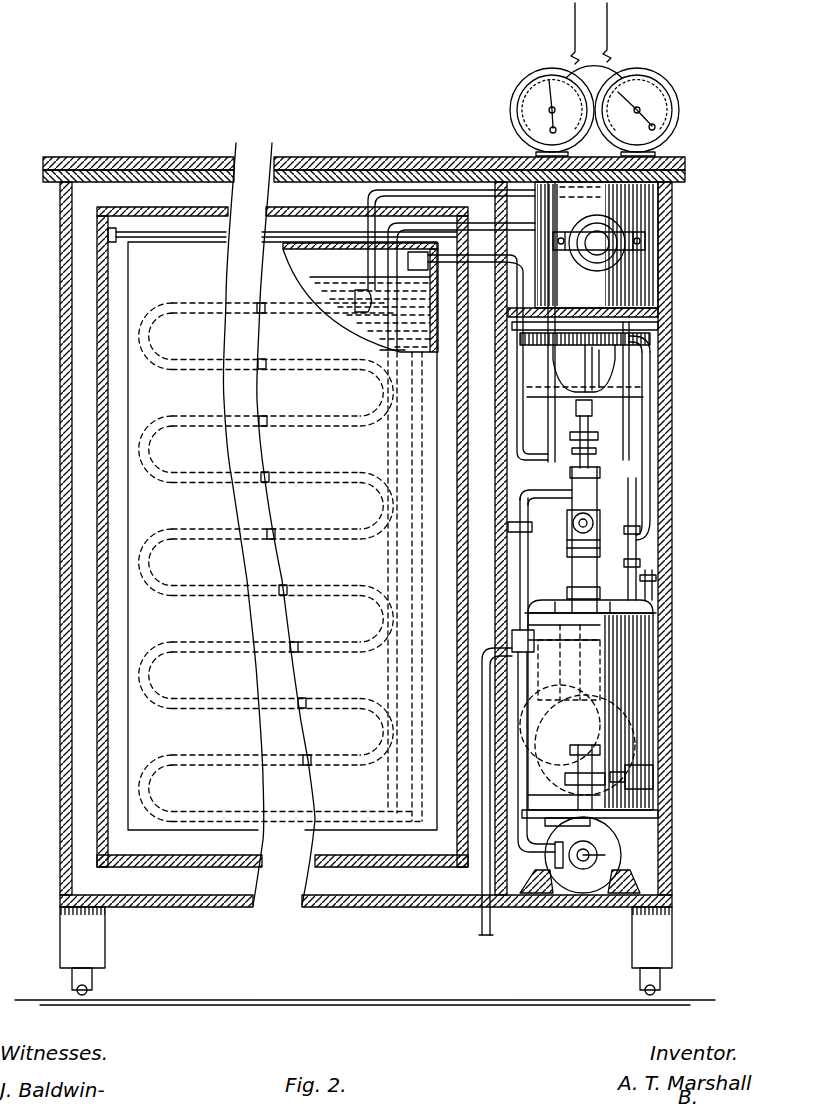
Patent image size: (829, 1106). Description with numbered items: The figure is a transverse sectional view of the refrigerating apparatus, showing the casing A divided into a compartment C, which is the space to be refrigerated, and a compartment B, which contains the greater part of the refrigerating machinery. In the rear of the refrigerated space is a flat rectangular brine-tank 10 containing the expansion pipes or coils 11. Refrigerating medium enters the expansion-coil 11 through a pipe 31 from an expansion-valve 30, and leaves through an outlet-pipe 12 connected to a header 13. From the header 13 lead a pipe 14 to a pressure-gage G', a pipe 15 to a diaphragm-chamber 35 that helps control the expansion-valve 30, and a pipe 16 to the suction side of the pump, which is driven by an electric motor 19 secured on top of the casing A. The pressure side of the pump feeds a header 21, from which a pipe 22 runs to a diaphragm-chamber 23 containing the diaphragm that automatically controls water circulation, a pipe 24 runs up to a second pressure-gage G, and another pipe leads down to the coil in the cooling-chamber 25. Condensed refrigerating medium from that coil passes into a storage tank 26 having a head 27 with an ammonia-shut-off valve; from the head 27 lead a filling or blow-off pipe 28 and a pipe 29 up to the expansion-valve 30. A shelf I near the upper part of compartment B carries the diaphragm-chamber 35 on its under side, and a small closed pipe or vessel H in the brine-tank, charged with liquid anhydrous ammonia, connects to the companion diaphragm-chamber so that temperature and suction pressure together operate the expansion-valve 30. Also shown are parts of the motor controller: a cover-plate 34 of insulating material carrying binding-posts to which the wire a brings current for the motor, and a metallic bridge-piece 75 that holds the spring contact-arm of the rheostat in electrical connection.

The casing A is at (364, 563).
The compartment C is at (100, 432).
The brine-tank 10 is at (140, 288).
The expansion pipes or coils 11 is at (257, 300).
The outlet-pipe 12 is at (400, 190).
The closed pipe or vessel H is at (430, 223).
The diaphragm-chamber 23 is at (198, 233).
The pipe 31 is at (520, 463).
The wire a is at (573, 22).
The electric motor 19 is at (607, 72).
The pressure-gage G is at (530, 112).
The pressure-gage G' is at (659, 112).
The pipe 14 is at (656, 160).
The cover-plate 34 is at (650, 202).
The bridge-piece 75 is at (648, 246).
The pipe 24 is at (556, 243).
The shelf I is at (660, 316).
The diaphragm-chamber 35 is at (618, 360).
The expansion-valve 30 is at (595, 434).
The header 21 is at (589, 549).
The compartment B is at (612, 490).
The pipe 15 is at (650, 503).
The pipe 22 is at (540, 492).
The header 13 is at (656, 580).
The pipe 16 is at (600, 614).
The cooling-chamber 25 is at (652, 687).
The head 27 is at (583, 882).
The filling or blow-off pipe 28 is at (635, 798).
The storage tank 26 is at (641, 885).
The pipe 29 is at (548, 882).